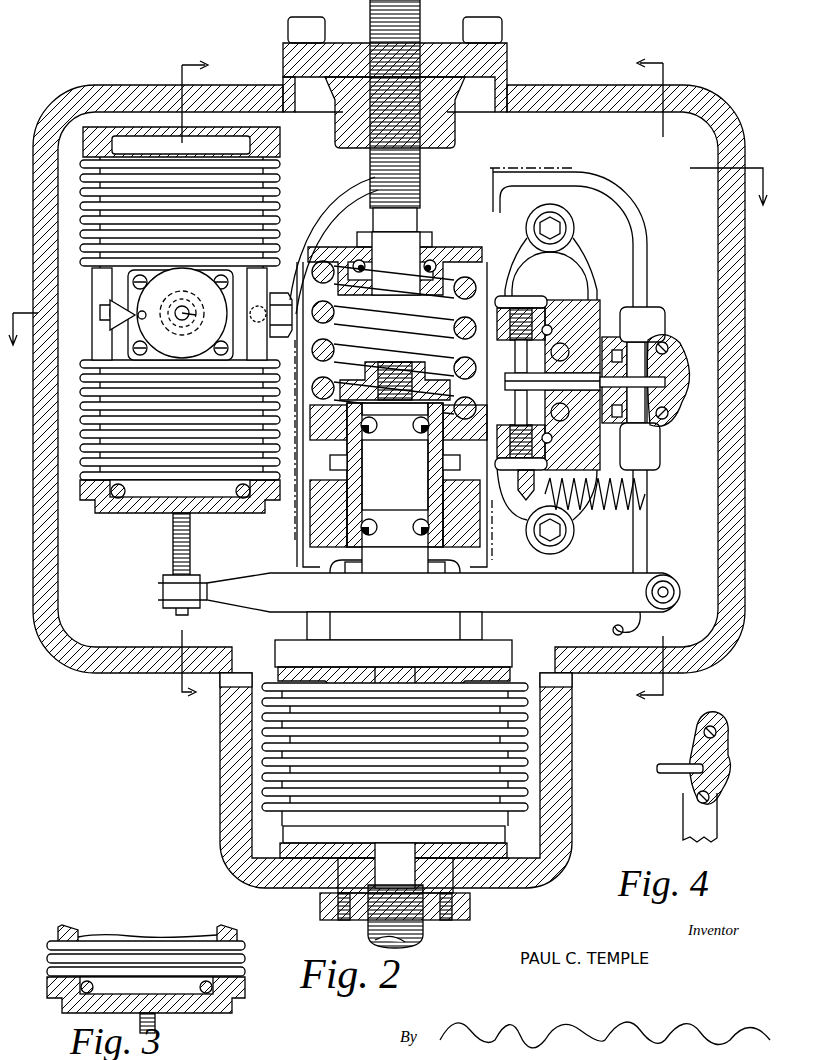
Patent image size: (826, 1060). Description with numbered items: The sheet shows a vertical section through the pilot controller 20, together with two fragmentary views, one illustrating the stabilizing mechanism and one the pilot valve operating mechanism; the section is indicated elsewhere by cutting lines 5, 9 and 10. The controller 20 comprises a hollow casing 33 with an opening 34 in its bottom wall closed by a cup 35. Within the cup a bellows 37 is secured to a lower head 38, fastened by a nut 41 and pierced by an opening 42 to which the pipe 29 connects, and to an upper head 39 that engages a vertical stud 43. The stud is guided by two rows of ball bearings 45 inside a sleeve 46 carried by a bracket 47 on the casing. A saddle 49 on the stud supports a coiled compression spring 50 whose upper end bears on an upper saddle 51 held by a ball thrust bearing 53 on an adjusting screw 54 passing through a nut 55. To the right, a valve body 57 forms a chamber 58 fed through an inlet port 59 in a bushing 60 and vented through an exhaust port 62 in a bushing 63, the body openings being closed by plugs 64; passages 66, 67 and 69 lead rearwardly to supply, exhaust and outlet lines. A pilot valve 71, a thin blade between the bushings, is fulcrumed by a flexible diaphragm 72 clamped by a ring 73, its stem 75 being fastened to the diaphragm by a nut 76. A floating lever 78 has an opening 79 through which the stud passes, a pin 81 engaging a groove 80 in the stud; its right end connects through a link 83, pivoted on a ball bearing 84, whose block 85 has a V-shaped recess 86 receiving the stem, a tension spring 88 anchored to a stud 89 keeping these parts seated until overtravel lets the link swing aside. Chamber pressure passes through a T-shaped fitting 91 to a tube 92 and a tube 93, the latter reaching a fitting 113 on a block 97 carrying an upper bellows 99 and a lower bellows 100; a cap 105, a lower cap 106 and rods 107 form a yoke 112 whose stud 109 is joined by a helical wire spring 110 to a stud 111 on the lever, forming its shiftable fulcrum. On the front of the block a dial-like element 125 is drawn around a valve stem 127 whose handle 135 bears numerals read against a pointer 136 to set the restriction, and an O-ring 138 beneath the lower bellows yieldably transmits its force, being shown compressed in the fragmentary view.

In FIG. 2, the section line 5- 5 is at (387, 269).
In FIG. 2, the section line 9- 9 is at (638, 381).
In FIG. 2, the section line 10- 10 is at (207, 382).
In FIG. 2, the controller 20 is at (562, 80).
In FIG. 2, the pipe 29 is at (424, 934).
In FIG. 2, the casing 33 is at (92, 664).
In FIG. 2, the opening 34 is at (240, 652).
In FIG. 2, the cup 35 is at (222, 780).
In FIG. 2, the bellows 37 is at (262, 790).
In FIG. 2, the lower head 38 is at (280, 850).
In FIG. 2, the upper head 39 is at (336, 668).
In FIG. 2, the nut 41 is at (471, 906).
In FIG. 2, the opening 42 is at (386, 858).
In FIG. 2, the stud 43 is at (395, 475).
In FIG. 2, the ball bearings 45 is at (375, 540).
In FIG. 2, the sleeve 46 is at (330, 462).
In FIG. 2, the bracket 47 is at (325, 497).
In FIG. 2, the saddle 49 is at (312, 412).
In FIG. 2, the coiled compression spring 50 is at (312, 380).
In FIG. 2, the upper saddle 51 is at (468, 251).
In FIG. 2, the ball thrust bearing 53 is at (432, 259).
In FIG. 2, the adjusting screw 54 is at (421, 162).
In FIG. 2, the nut 55 is at (490, 60).
In FIG. 2, the valve body 57 is at (570, 274).
In FIG. 2, the chamber 58 is at (572, 385).
In FIG. 2, the inlet port 59 is at (476, 390).
In FIG. 2, the inlet bushing 60 is at (484, 452).
In FIG. 2, the exhaust port 62 is at (478, 334).
In FIG. 2, the exhaust bushing 63 is at (487, 340).
In FIG. 2, the plugs 64 is at (527, 297).
In FIG. 2, the passage 66 is at (560, 436).
In FIG. 2, the passage 67 is at (552, 322).
In FIG. 2, the passage 69 is at (574, 412).
In FIG. 2, the pilot valve 71 is at (490, 378).
In FIG. 2, the diaphragm 72 is at (600, 455).
In FIG. 2, the ring 73 is at (606, 338).
In FIG. 2, the stem 75 is at (648, 420).
In FIG. 4, the stem 75 is at (668, 775).
In FIG. 2, the nut 76 is at (646, 326).
In FIG. 2, the floating lever 78 is at (524, 600).
In FIG. 2, the opening 79 is at (352, 601).
In FIG. 2, the groove 80 is at (390, 600).
In FIG. 2, the pin 81 is at (426, 601).
In FIG. 2, the link 83 is at (672, 534).
In FIG. 4, the link 83 is at (712, 832).
In FIG. 2, the ball bearing 84 is at (679, 600).
In FIG. 2, the block 85 is at (672, 393).
In FIG. 4, the block 85 is at (728, 776).
In FIG. 2, the V-shaped recess 86 is at (672, 364).
In FIG. 4, the V-shaped recess 86 is at (696, 760).
In FIG. 2, the tension spring 88 is at (612, 500).
In FIG. 2, the stud 89 is at (518, 510).
In FIG. 2, the T-shaped fitting 91 is at (660, 326).
In FIG. 2, the tube 92 is at (612, 627).
In FIG. 2, the tube 93 is at (590, 200).
In FIG. 2, the block 97 is at (120, 292).
In FIG. 2, the upper bellows 99 is at (281, 199).
In FIG. 2, the lower bellows 100 is at (72, 465).
In FIG. 3, the lower bellows 100 is at (47, 976).
In FIG. 2, the cap 105 is at (281, 151).
In FIG. 2, the lower cap 106 is at (262, 512).
In FIG. 2, the rods 107 is at (102, 312).
In FIG. 3, the rods 107 is at (58, 932).
In FIG. 2, the stud 109 is at (174, 525).
In FIG. 3, the stud 109 is at (140, 1020).
In FIG. 2, the helical wire spring 110 is at (174, 545).
In FIG. 3, the helical wire spring 110 is at (156, 1022).
In FIG. 2, the stud 111 is at (174, 568).
In FIG. 2, the yoke 112 is at (118, 512).
In FIG. 3, the yoke 112 is at (222, 1010).
In FIG. 2, the fitting 113 is at (305, 350).
In FIG. 2, the dial 125 is at (180, 314).
In FIG. 2, the valve stem 127 is at (186, 313).
In FIG. 2, the handle 135 is at (122, 336).
In FIG. 2, the pointer 136 is at (138, 318).
In FIG. 2, the O-ring 138 is at (237, 505).
In FIG. 3, the O-ring 138 is at (82, 1010).